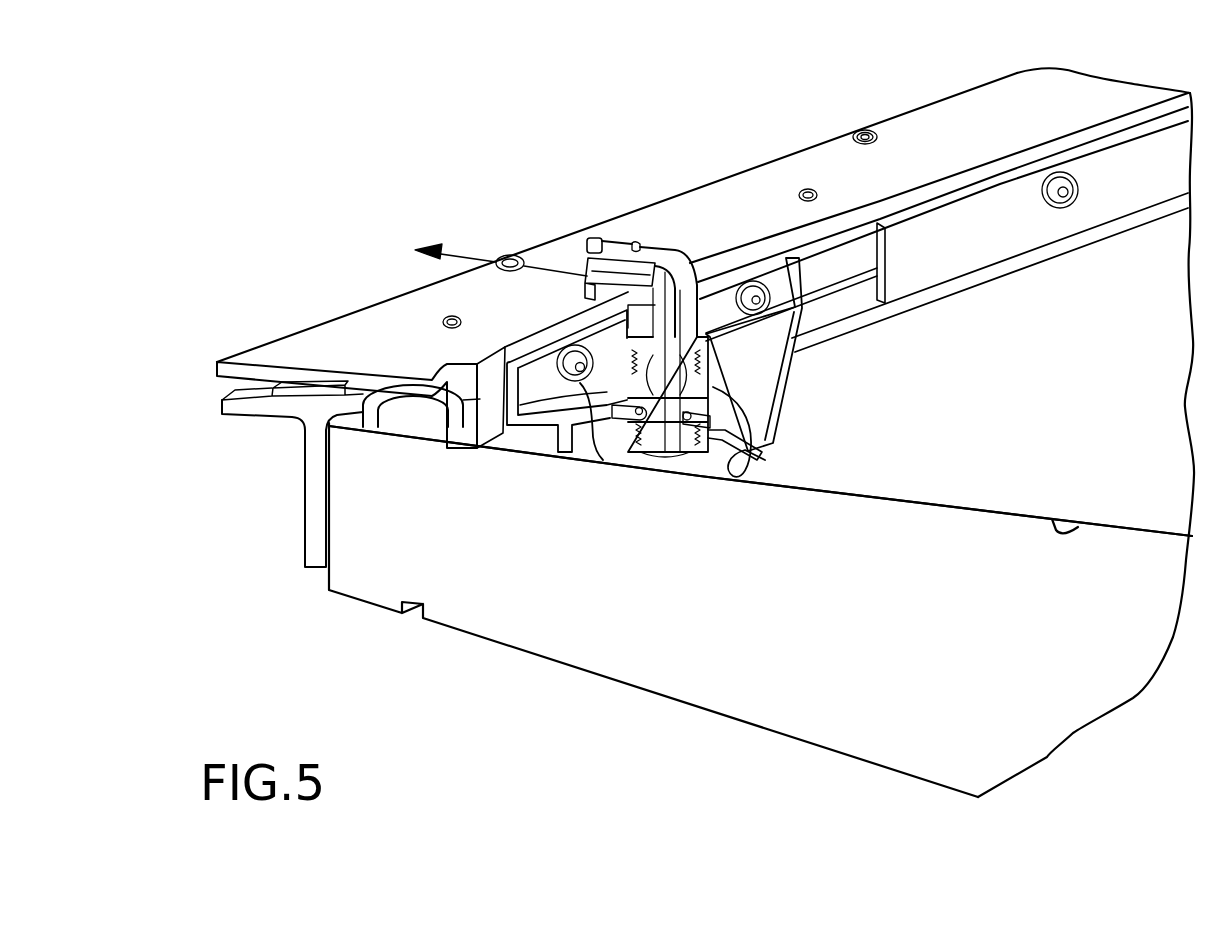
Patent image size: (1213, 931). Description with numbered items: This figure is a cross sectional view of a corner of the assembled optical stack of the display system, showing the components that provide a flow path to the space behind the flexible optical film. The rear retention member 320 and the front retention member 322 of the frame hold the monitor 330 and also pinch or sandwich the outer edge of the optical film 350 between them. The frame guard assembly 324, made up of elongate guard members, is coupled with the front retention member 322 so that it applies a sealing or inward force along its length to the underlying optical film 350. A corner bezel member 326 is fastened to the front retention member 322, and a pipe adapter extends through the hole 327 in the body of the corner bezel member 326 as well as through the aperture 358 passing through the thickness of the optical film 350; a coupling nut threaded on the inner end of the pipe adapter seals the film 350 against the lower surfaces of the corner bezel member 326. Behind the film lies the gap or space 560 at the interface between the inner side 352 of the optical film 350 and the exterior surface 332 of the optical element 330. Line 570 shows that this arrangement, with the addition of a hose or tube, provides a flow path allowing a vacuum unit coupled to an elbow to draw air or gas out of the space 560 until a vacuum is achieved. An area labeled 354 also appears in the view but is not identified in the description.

The rear retention member 320 is at (253, 430).
The front retention member 322 is at (732, 166).
The frame guard assembly 324 is at (975, 178).
The corner bezel member 326 is at (822, 382).
The hole/aperture 327 is at (716, 390).
The monitor 330 is at (535, 678).
The exterior surface 332 is at (866, 496).
The optical film 350 is at (977, 526).
The inner side 352 is at (1078, 527).
The surface 354 is at (1094, 392).
The aperture or opening 358 is at (752, 460).
The gap or space 560 is at (618, 462).
The line 570 is at (482, 258).